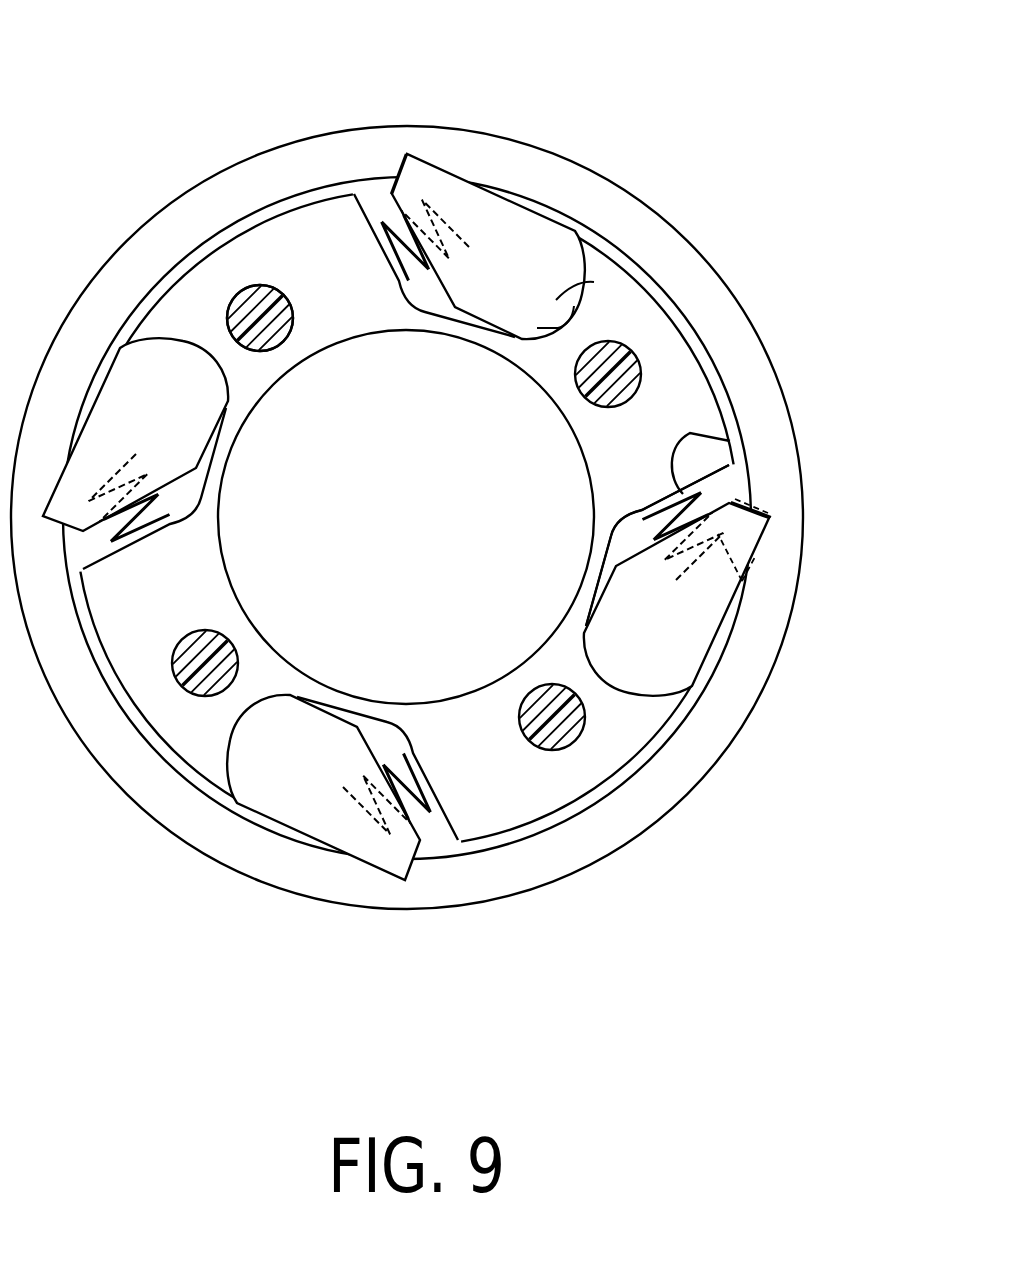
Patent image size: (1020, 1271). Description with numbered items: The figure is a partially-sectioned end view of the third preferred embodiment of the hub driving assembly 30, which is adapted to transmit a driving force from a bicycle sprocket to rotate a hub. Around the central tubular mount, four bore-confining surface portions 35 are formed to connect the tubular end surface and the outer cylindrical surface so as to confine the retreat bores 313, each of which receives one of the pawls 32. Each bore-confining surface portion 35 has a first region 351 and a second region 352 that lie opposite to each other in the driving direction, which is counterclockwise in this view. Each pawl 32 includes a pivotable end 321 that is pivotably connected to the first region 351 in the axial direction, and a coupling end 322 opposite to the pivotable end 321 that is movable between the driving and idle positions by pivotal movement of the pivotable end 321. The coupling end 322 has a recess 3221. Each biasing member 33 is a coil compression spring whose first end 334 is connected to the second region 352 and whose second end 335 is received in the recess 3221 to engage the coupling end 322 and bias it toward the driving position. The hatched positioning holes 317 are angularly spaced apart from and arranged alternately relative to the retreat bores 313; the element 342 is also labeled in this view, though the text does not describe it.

The hub driving assembly 30 is at (714, 190).
The pawl 32 is at (522, 225).
The biasing member 33 is at (390, 215).
The bore-confining surface portion 35 is at (473, 325).
The retreat bore 313 is at (623, 548).
The positioning hole 317 is at (278, 288).
The pivotable end 321 is at (542, 330).
The coupling end 322 is at (411, 170).
The recess 3221 is at (770, 493).
The first end 334 is at (690, 440).
The second end 335 is at (742, 580).
The hole 342 is at (240, 317).
The first region 351 is at (568, 292).
The second region 352 is at (362, 210).